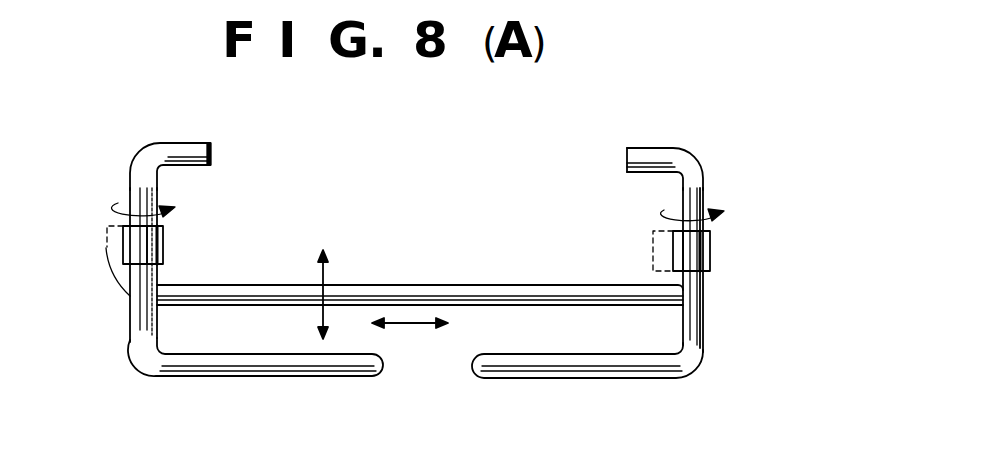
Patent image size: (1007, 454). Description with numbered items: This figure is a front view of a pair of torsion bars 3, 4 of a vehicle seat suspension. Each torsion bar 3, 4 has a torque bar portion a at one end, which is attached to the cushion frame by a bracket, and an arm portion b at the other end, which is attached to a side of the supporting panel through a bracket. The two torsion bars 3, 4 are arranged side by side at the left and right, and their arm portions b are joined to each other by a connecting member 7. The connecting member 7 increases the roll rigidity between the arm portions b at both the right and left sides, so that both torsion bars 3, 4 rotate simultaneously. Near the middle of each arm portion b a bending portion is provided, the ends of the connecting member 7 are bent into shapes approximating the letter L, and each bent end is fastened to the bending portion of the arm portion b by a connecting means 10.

The torsion bar 3 is at (137, 345).
The torsion bar 4 is at (697, 343).
The connecting member 7 is at (440, 297).
The connecting means 10 is at (123, 232).
The torque bar portion a is at (297, 368).
The arm portion b is at (131, 179).